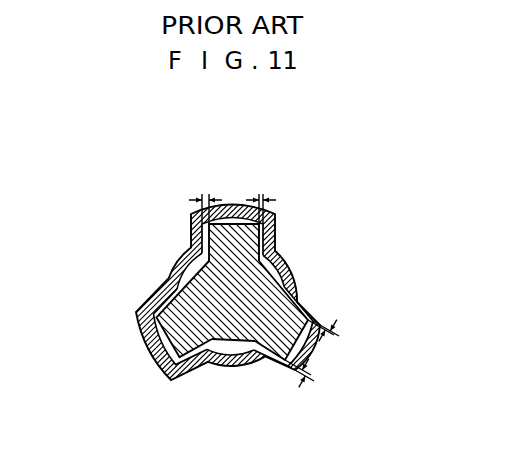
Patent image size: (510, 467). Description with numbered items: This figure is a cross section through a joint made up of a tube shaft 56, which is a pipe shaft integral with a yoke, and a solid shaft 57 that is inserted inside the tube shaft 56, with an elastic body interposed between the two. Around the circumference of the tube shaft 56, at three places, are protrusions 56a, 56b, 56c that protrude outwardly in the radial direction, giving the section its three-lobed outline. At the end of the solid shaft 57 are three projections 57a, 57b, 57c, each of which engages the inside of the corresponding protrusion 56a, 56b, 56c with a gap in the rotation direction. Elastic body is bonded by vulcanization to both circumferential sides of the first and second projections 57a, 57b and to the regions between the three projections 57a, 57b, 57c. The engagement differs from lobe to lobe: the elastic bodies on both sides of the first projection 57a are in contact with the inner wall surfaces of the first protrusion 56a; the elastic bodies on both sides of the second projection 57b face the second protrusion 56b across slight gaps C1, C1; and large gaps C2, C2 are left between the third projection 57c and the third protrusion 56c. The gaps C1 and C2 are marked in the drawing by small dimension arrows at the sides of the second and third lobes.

The tube shaft 56 is at (284, 258).
The first protrusion 56a is at (146, 356).
The second protrusion 56b is at (264, 205).
The third protrusion 56c is at (279, 370).
The solid shaft 57 is at (282, 276).
The first projection 57a is at (140, 335).
The second projection 57b is at (214, 217).
The third projection 57c is at (302, 352).
The slight gap C1 is at (272, 152).
The large gap C2 is at (320, 402).